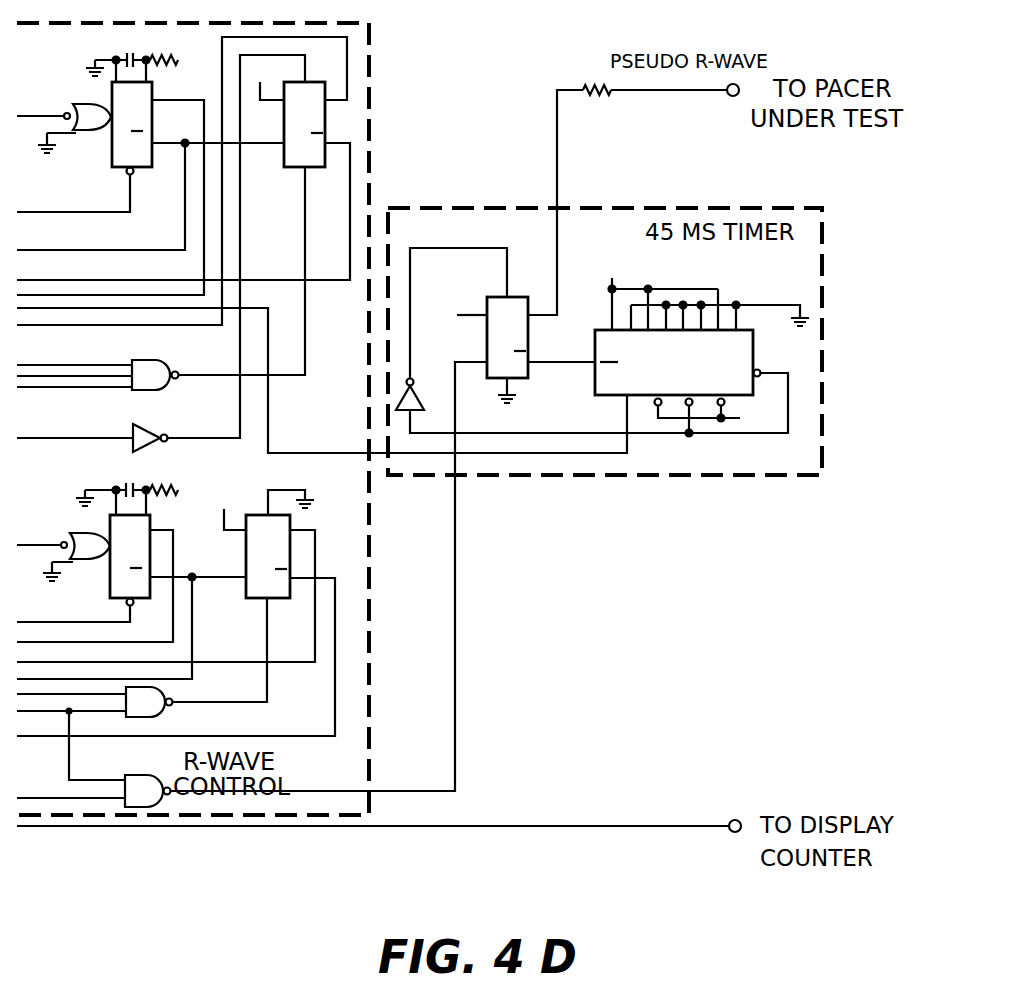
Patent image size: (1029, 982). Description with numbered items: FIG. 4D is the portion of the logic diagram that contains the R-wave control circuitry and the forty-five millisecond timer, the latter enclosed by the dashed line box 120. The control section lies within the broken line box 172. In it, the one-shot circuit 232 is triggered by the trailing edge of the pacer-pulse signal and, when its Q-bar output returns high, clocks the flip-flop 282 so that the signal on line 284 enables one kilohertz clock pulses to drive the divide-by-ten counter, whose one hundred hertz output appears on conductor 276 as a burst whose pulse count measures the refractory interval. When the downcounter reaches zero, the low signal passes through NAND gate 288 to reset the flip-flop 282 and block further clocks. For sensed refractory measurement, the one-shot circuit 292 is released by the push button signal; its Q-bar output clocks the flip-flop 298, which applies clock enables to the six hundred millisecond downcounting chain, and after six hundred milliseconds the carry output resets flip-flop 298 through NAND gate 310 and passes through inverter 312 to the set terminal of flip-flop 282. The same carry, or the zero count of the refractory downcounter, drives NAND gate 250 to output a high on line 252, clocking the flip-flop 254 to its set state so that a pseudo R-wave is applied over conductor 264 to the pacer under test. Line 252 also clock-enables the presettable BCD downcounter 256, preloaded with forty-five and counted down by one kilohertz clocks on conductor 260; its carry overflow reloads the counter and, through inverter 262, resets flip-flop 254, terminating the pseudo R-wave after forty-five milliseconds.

The dashed line box 120 is at (473, 207).
The R-wave control circuit 172 is at (371, 118).
The one-shot circuit 232 is at (110, 151).
The NAND gate 250 is at (144, 774).
The line 252 is at (458, 573).
The flip-flop 254 is at (486, 300).
The presettable BCD downcounter 256 is at (595, 380).
The conductor 260 is at (270, 412).
The inverter 262 is at (418, 380).
The conductor 264 is at (556, 108).
The conductor 276 is at (537, 826).
The flip-flop 282 is at (284, 160).
The line 284 is at (124, 328).
The NAND gate 288 is at (165, 362).
The one-shot circuit 292 is at (108, 586).
The flip-flop 298 is at (244, 594).
The NAND gate 310 is at (164, 714).
The inverter 312 is at (136, 434).